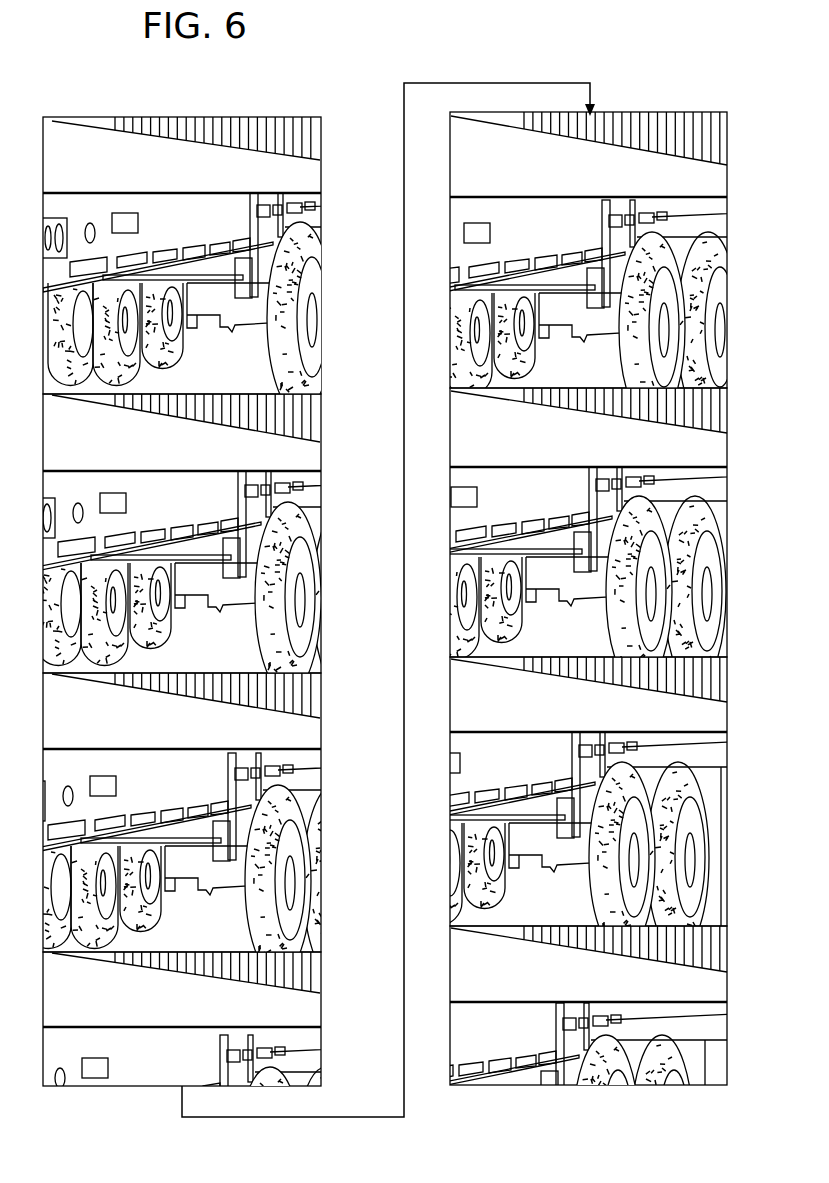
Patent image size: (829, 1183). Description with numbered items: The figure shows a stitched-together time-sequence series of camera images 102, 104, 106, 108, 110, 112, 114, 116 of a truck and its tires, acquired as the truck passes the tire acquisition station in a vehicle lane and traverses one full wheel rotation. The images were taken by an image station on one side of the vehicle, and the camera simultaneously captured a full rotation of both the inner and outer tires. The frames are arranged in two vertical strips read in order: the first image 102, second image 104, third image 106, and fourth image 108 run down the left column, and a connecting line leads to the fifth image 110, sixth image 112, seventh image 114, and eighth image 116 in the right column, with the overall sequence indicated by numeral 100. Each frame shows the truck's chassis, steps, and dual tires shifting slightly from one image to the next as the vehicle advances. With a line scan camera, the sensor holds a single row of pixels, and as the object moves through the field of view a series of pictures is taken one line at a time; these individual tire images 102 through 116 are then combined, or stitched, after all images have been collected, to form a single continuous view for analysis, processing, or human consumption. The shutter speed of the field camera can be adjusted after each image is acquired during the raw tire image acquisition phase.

The sequence of captured image frames 100 is at (146, 104).
The image 102 is at (235, 265).
The image 104 is at (223, 544).
The image 106 is at (213, 825).
The image 108 is at (205, 1067).
The image 110 is at (587, 268).
The image 112 is at (577, 538).
The image 114 is at (569, 805).
The image 116 is at (561, 1054).